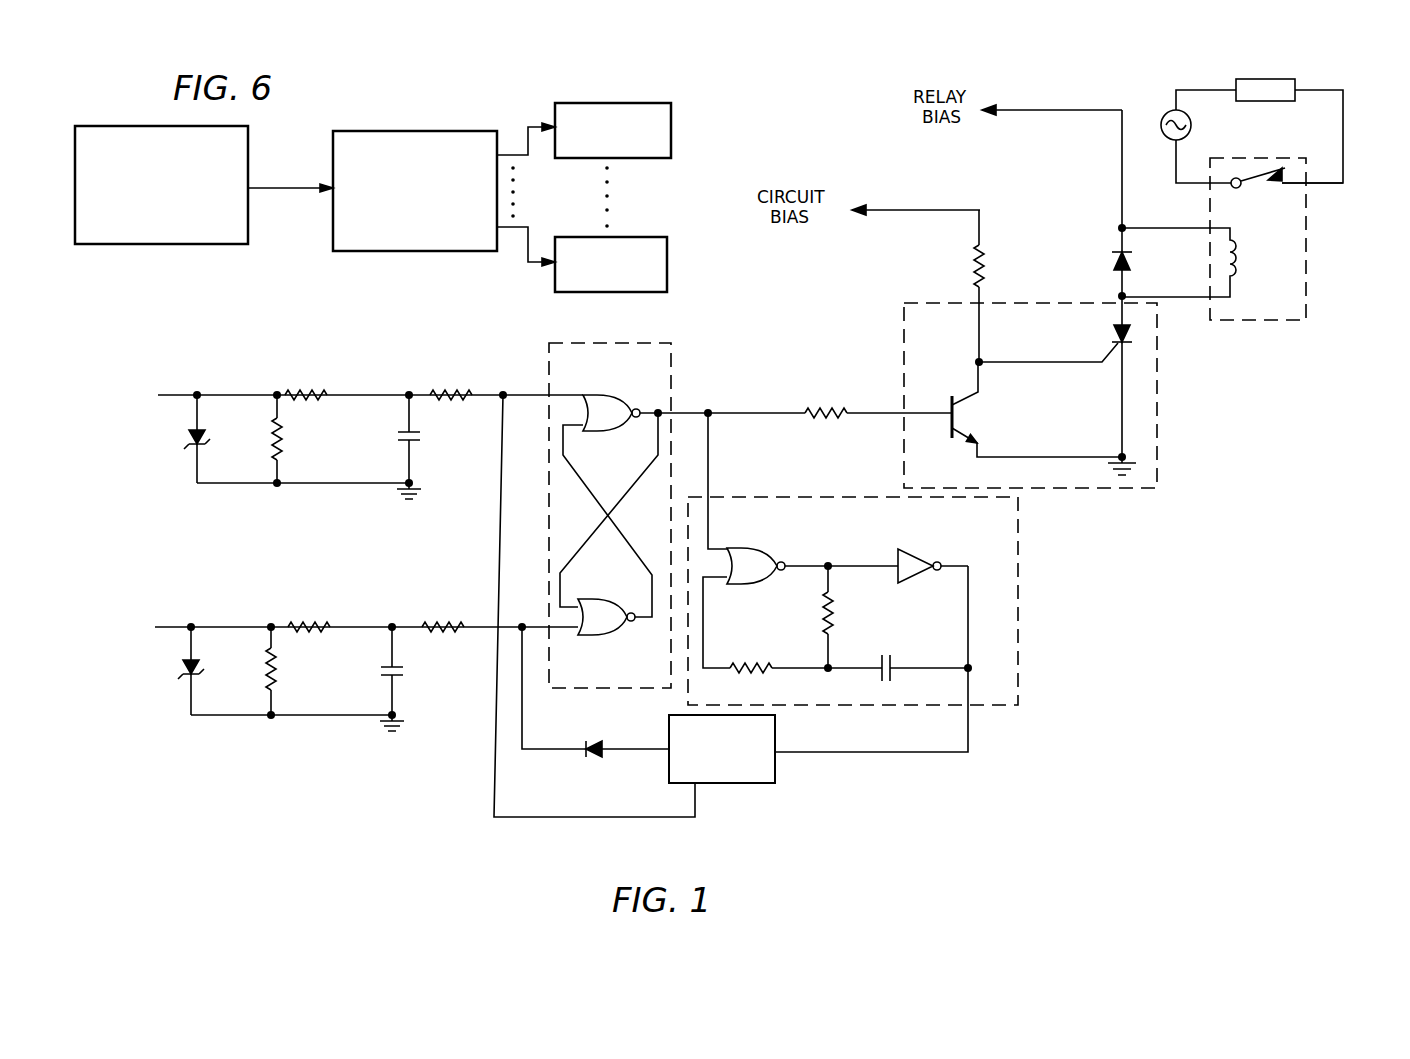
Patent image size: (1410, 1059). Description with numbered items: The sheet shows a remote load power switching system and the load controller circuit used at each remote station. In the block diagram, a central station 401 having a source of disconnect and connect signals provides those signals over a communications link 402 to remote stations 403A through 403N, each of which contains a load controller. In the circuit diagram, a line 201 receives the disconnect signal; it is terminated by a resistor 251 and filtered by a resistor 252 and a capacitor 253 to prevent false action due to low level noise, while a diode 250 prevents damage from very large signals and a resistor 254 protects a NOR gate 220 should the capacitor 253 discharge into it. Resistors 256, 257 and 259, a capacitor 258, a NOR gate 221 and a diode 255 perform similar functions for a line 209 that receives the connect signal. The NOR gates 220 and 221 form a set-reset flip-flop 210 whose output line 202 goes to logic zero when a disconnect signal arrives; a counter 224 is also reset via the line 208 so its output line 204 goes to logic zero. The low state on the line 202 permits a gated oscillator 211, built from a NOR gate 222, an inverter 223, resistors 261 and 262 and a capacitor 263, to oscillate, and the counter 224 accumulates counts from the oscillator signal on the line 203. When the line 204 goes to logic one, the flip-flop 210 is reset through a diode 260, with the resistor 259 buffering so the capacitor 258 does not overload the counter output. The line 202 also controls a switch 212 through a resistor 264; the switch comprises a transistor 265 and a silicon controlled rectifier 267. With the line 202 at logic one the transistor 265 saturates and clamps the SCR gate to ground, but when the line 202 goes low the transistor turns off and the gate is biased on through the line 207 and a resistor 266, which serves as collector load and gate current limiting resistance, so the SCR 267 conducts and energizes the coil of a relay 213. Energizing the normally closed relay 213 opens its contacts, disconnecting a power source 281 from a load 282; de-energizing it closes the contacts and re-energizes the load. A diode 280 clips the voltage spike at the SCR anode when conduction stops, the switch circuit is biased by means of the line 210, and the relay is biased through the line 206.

In FIG. 1, the line 201 is at (170, 393).
In FIG. 1, the line 202 is at (758, 410).
In FIG. 1, the line 203 is at (968, 752).
In FIG. 1, the line 204 is at (642, 748).
In FIG. 1, the line 206 is at (1086, 110).
In FIG. 1, the line 207 is at (977, 289).
In FIG. 1, the line 208 is at (556, 816).
In FIG. 1, the line 209 is at (173, 622).
In FIG. 1, the set-reset flip-flop 210 is at (553, 690).
In FIG. 1, the gated oscillator 211 is at (798, 493).
In FIG. 1, the switch 212 is at (1158, 485).
In FIG. 1, the relay 213 is at (1307, 310).
In FIG. 1, the NOR gate 220 is at (602, 392).
In FIG. 1, the NOR gate 221 is at (603, 637).
In FIG. 1, the NOR gate 222 is at (752, 548).
In FIG. 1, the inverter 223 is at (917, 548).
In FIG. 1, the counter 224 is at (735, 773).
In FIG. 1, the diode 250 is at (188, 432).
In FIG. 1, the resistor 251 is at (285, 436).
In FIG. 1, the resistor 252 is at (310, 390).
In FIG. 1, the capacitor 253 is at (405, 430).
In FIG. 1, the resistor 254 is at (452, 390).
In FIG. 1, the diode 255 is at (196, 672).
In FIG. 1, the resistor 256 is at (278, 671).
In FIG. 1, the resistor 257 is at (326, 622).
In FIG. 1, the capacitor 258 is at (388, 672).
In FIG. 1, the resistor 259 is at (455, 623).
In FIG. 1, the diode 260 is at (585, 752).
In FIG. 1, the resistor 261 is at (748, 663).
In FIG. 1, the resistor 262 is at (822, 618).
In FIG. 1, the capacitor 263 is at (895, 665).
In FIG. 1, the resistor 264 is at (840, 410).
In FIG. 1, the transistor 265 is at (982, 411).
In FIG. 1, the resistor 266 is at (983, 262).
In FIG. 1, the silicon controlled rectifier 267 is at (1110, 340).
In FIG. 1, the diode 280 is at (1132, 258).
In FIG. 1, the power source 281 is at (1192, 128).
In FIG. 1, the load 282 is at (1266, 79).
In FIG. 6, the central station 401 is at (148, 245).
In FIG. 6, the communications link 402 is at (408, 250).
In FIG. 6, the remote station 403A is at (617, 103).
In FIG. 6, the remote station 403N is at (667, 284).